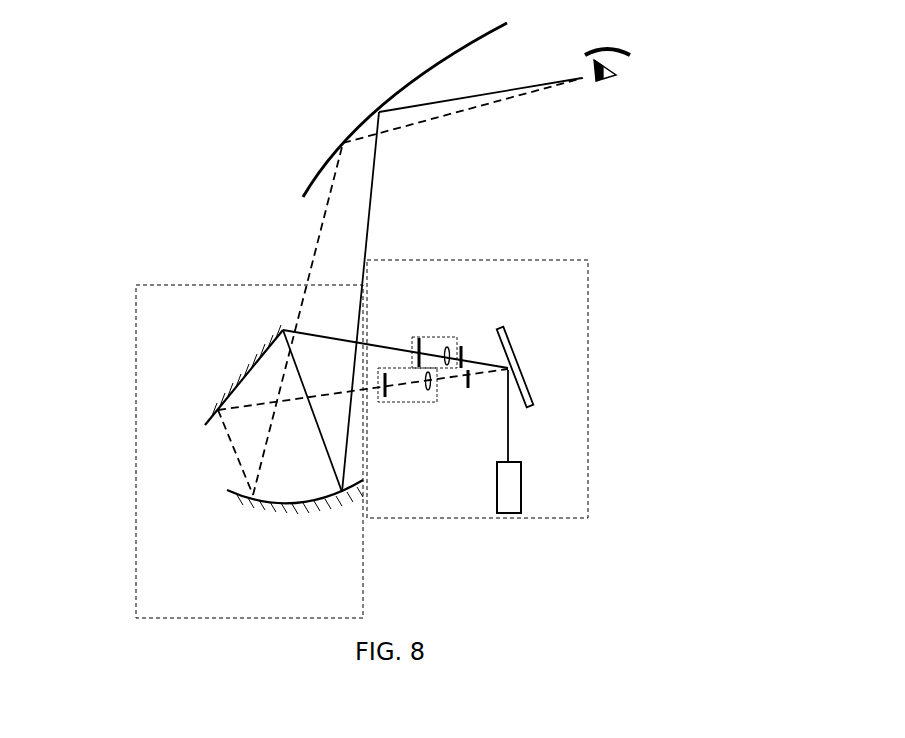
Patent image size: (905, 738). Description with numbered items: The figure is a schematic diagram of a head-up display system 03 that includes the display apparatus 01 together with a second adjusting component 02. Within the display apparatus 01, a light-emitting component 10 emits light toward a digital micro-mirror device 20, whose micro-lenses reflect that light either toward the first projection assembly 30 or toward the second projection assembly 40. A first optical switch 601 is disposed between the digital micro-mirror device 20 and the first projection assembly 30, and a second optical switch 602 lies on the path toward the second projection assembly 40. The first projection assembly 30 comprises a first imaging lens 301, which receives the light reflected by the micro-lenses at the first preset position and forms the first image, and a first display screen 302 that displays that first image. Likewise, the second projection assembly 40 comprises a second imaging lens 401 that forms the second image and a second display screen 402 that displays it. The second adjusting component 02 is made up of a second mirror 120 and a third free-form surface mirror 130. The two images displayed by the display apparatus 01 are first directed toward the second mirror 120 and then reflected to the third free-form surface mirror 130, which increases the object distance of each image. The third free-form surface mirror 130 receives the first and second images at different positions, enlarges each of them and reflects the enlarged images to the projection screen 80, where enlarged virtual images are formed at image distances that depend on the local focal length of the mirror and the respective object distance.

The head-up display system 03 is at (150, 183).
The projection screen 80 is at (433, 72).
The second adjusting component 02 is at (146, 570).
The display apparatus 01 is at (590, 385).
The second mirror 120 is at (243, 367).
The third free-form surface mirror 130 is at (305, 507).
The first projection assembly 30 is at (443, 314).
The first imaging lens 301 is at (447, 340).
The first display screen 302 is at (415, 340).
The first optical switch 601 is at (466, 345).
The second projection assembly 40 is at (414, 425).
The second imaging lens 401 is at (427, 387).
The second display screen 402 is at (383, 397).
The second optical switch 602 is at (470, 382).
The digital micro-mirror device 20 is at (510, 348).
The light-emitting component 10 is at (503, 488).